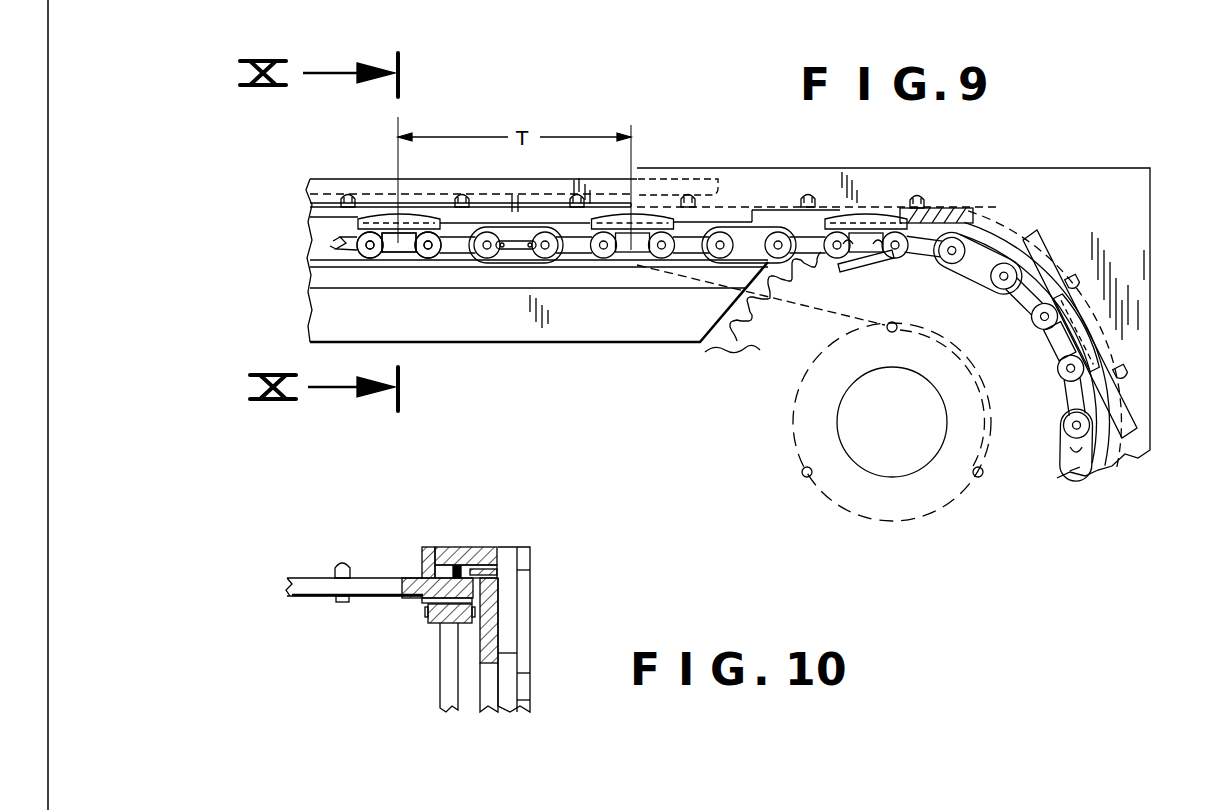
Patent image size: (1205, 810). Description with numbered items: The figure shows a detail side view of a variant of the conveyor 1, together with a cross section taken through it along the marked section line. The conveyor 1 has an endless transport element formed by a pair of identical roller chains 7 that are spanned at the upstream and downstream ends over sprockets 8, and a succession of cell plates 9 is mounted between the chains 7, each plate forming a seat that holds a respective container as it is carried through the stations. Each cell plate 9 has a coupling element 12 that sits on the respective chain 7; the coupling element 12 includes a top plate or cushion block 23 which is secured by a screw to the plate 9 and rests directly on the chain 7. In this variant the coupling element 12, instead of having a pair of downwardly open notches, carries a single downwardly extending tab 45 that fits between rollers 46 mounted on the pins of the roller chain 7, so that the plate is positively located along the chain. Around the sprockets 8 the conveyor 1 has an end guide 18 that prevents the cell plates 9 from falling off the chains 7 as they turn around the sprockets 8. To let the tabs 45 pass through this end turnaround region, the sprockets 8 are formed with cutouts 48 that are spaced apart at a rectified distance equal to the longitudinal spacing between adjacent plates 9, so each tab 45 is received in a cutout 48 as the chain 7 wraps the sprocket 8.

In FIG. 9, the conveyor 1 is at (593, 286).
In FIG. 9, the roller chain 7 is at (503, 261).
In FIG. 9, the sprocket 8 is at (762, 322).
In FIG. 9, the cell plate 9 is at (1042, 252).
In FIG. 10, the cell plate 9 is at (307, 583).
In FIG. 9, the coupling element 12 is at (390, 222).
In FIG. 10, the coupling element 12 is at (413, 580).
In FIG. 9, the end guide 18 is at (1032, 183).
In FIG. 10, the cushion block 23 is at (432, 627).
In FIG. 9, the tab 45 is at (393, 240).
In FIG. 9, the roller 46 is at (368, 258).
In FIG. 9, the cutout 48 is at (873, 262).